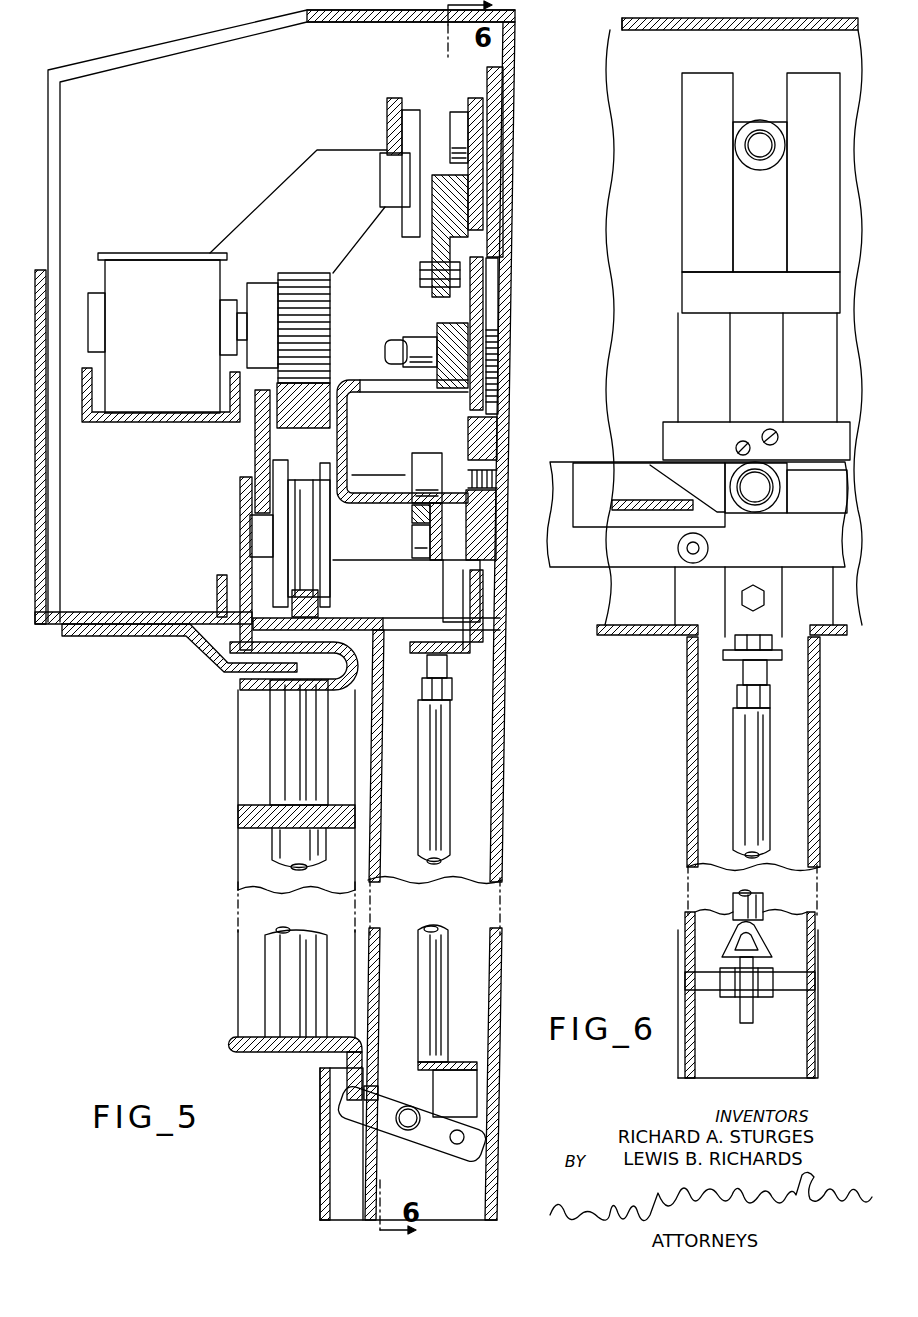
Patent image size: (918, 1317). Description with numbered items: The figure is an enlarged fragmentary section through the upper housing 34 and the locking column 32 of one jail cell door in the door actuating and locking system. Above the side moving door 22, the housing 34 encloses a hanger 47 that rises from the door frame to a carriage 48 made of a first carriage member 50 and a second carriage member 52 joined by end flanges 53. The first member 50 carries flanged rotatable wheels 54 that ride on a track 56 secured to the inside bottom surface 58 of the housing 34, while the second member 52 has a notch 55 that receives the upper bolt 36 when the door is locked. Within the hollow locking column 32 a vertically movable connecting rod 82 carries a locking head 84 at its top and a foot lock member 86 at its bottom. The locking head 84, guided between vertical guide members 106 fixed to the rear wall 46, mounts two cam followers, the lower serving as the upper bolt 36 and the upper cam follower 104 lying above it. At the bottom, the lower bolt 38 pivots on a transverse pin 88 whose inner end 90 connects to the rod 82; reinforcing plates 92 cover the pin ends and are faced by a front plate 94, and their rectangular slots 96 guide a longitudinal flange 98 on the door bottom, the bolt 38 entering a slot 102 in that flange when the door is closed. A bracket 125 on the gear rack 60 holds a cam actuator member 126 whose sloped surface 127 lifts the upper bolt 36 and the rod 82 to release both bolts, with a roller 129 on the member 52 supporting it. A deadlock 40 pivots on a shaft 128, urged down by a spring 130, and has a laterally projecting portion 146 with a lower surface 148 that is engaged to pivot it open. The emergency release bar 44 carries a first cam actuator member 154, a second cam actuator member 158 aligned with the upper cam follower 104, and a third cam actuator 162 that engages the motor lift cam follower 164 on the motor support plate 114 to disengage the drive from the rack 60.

In FIG. 5, the side moving jail type door 22 is at (248, 979).
In FIG. 5, the locking column 32 is at (500, 966).
In FIG. 6, the locking column 32 is at (688, 921).
In FIG. 5, the housing 34 is at (133, 50).
In FIG. 5, the upper bolt 36 is at (424, 458).
In FIG. 6, the upper bolt 36 is at (757, 512).
In FIG. 5, the lower bolt 38 is at (433, 1153).
In FIG. 6, the lower bolt 38 is at (745, 1024).
In FIG. 5, the deadlock 40 is at (490, 266).
In FIG. 5, the emergency release bar 44 is at (463, 212).
In FIG. 5, the rear wall 46 is at (502, 38).
In FIG. 6, the rear wall 46 is at (626, 338).
In FIG. 5, the hanger 47 is at (238, 652).
In FIG. 5, the carriage 48 is at (256, 455).
In FIG. 5, the first carriage member 50 is at (270, 440).
In FIG. 5, the second carriage member 52 is at (416, 571).
In FIG. 6, the second carriage member 52 is at (574, 561).
In FIG. 5, the end flanges 53 is at (368, 486).
In FIG. 5, the flanged rotatable wheels 54 is at (310, 568).
In FIG. 6, the notch 55 is at (781, 513).
In FIG. 5, the track 56 is at (315, 614).
In FIG. 5, the inside bottom surface 58 is at (263, 617).
In FIG. 5, the gear rack 60 is at (315, 385).
In FIG. 5, the connecting rod 82 is at (442, 930).
In FIG. 6, the connecting rod 82 is at (750, 763).
In FIG. 6, the locking head 84 is at (743, 225).
In FIG. 5, the foot lock member 86 is at (463, 1097).
In FIG. 5, the transverse pin 88 is at (407, 1131).
In FIG. 6, the transverse pin 88 is at (790, 995).
In FIG. 5, the inner end of the pin 90 is at (463, 1141).
In FIG. 6, the reinforcing plates 92 is at (680, 950).
In FIG. 5, the front plate 94 is at (322, 1125).
In FIG. 5, the rectangular slots 96 is at (333, 1058).
In FIG. 5, the longitudinal flange 98 is at (357, 1053).
In FIG. 5, the slot 102 is at (377, 1090).
In FIG. 5, the upper cam follower 104 is at (453, 112).
In FIG. 6, the upper cam follower 104 is at (760, 122).
In FIG. 6, the vertical guide members 106 is at (700, 368).
In FIG. 5, the support plate 114 is at (136, 423).
In FIG. 5, the bracket 125 is at (345, 446).
In FIG. 6, the bracket 125 is at (655, 511).
In FIG. 6, the cam actuator member 126 is at (590, 493).
In FIG. 6, the sloped surface 127 is at (679, 476).
In FIG. 5, the shaft 128 is at (420, 337).
In FIG. 5, the roller 129 is at (412, 545).
In FIG. 6, the roller 129 is at (709, 549).
In FIG. 5, the spring 130 is at (497, 343).
In FIG. 5, the laterally projecting portion 146 is at (457, 377).
In FIG. 5, the lower surface 148 is at (452, 390).
In FIG. 5, the first cam actuator member 154 is at (437, 290).
In FIG. 5, the second cam actuator member 158 is at (485, 178).
In FIG. 5, the third cam actuator 162 is at (437, 223).
In FIG. 5, the motor lift cam follower 164 is at (420, 163).